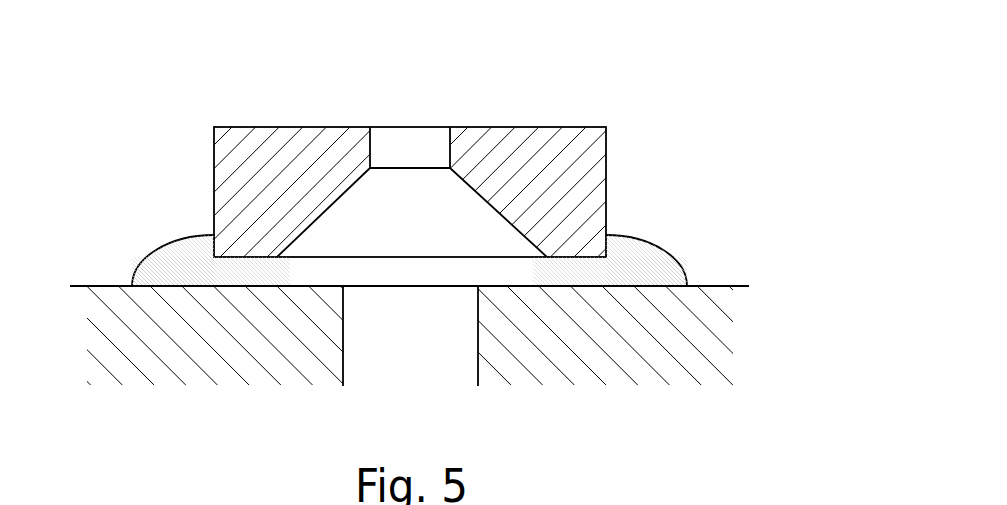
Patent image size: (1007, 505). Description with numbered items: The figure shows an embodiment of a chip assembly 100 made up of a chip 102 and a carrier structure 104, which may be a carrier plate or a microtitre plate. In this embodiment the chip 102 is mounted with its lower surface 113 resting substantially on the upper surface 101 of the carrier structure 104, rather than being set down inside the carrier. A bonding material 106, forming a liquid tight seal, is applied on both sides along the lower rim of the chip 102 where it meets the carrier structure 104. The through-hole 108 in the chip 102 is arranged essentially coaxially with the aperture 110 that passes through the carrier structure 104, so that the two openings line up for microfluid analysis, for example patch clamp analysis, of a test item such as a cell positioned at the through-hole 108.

The chip assembly 100 is at (391, 142).
The upper surface 101 is at (708, 286).
The chip 102 is at (550, 148).
The carrier structure 104 is at (622, 375).
The bonding material 106 is at (192, 252).
The through-hole 108 is at (405, 148).
The aperture 110 is at (437, 367).
The lower surface 113 is at (355, 258).